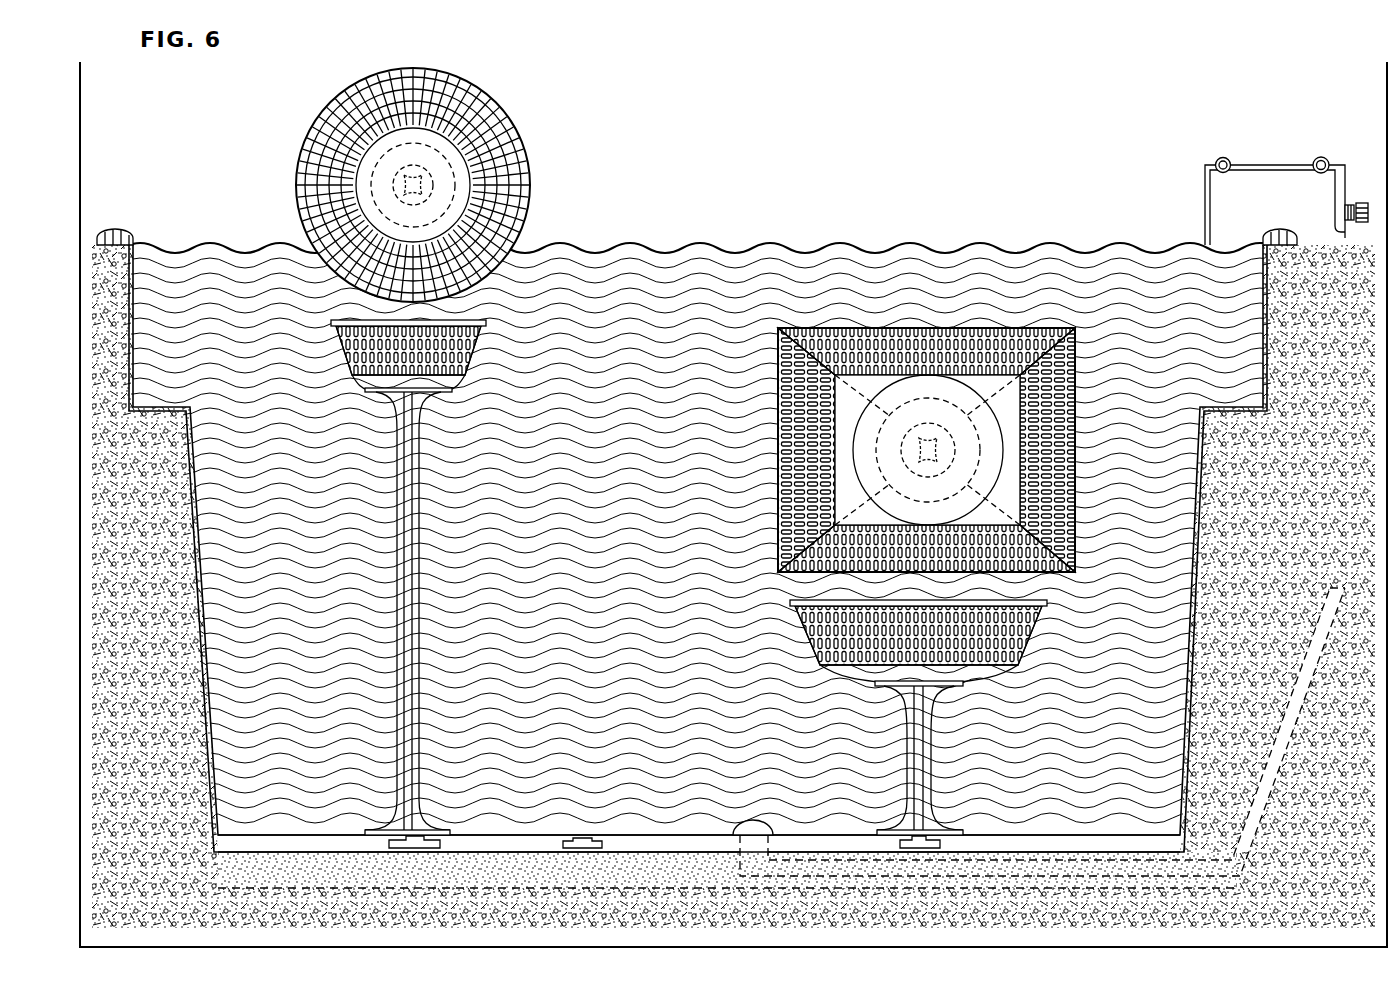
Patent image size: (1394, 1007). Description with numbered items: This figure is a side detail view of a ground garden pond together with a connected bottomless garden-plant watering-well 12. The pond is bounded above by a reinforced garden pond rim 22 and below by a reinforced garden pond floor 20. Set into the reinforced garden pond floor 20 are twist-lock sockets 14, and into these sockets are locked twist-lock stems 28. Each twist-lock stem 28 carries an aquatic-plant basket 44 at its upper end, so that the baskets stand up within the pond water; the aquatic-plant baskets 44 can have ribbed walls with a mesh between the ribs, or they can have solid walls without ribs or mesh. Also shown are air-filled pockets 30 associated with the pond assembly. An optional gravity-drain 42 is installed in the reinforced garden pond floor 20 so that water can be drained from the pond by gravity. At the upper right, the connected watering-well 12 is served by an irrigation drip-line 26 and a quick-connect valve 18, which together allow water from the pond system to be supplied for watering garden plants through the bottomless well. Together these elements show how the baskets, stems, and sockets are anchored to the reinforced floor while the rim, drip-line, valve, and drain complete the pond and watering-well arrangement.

The connected watering-well 12 is at (1270, 160).
The twist-lock socket 14 is at (582, 836).
The quick-connect valve 18 is at (1360, 200).
The reinforced garden pond floor 20 is at (1125, 846).
The reinforced garden pond rim 22 is at (121, 226).
The irrigation drip-line 26 is at (1326, 154).
The twist-lock stem 28 is at (412, 476).
The air-filled pockets 30 is at (963, 440).
The gravity-drain 42 is at (753, 822).
The aquatic-plant basket 44 is at (533, 137).